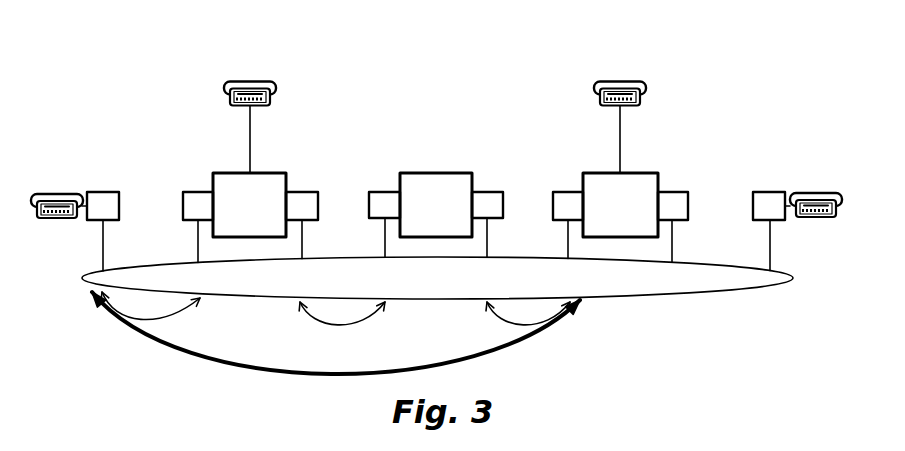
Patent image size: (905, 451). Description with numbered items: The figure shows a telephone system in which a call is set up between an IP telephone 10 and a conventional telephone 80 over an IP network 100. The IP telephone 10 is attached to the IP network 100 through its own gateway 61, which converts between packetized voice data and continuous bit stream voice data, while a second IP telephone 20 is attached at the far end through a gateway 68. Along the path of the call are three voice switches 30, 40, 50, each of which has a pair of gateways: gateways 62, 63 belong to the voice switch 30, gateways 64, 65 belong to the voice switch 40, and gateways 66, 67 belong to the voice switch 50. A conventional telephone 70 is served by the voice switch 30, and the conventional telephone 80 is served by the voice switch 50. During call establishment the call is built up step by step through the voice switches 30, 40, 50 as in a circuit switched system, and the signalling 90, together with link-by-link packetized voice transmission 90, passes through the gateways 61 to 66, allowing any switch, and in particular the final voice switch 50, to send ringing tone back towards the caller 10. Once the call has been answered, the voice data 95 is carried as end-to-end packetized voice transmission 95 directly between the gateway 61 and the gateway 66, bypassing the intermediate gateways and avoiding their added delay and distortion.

The IP telephone 10 is at (55, 193).
The IP telephone 20 is at (815, 193).
The voice switch 30 is at (265, 173).
The voice switch 40 is at (437, 173).
The voice switch 50 is at (636, 173).
The gateway 61 is at (103, 192).
The gateway 62 is at (199, 192).
The gateway 63 is at (300, 192).
The gateway 64 is at (385, 192).
The gateway 65 is at (487, 192).
The gateway 66 is at (570, 192).
The gateway 67 is at (672, 192).
The gateway 68 is at (770, 192).
The conventional telephone 70 is at (250, 81).
The conventional telephone 80 is at (620, 81).
The signalling / link-by-link packetized voice transmission 90 is at (177, 318).
The voice data / end-to-end packetized voice transmission 95 is at (232, 372).
The IP network 100 is at (692, 280).